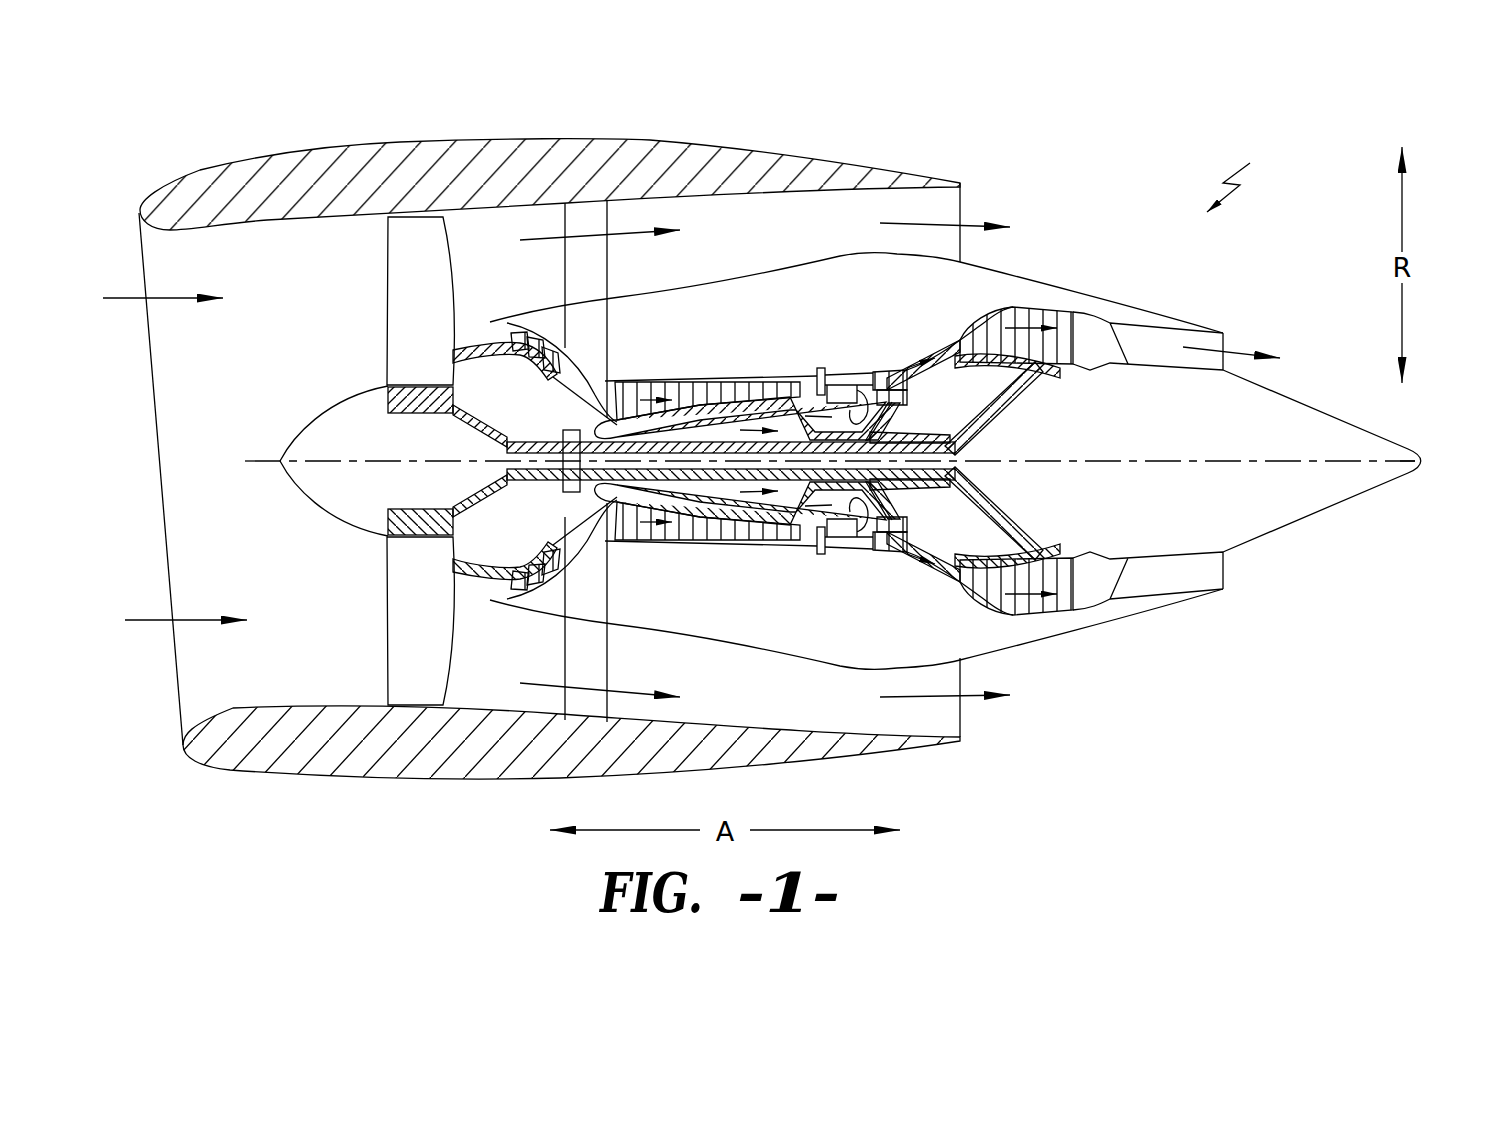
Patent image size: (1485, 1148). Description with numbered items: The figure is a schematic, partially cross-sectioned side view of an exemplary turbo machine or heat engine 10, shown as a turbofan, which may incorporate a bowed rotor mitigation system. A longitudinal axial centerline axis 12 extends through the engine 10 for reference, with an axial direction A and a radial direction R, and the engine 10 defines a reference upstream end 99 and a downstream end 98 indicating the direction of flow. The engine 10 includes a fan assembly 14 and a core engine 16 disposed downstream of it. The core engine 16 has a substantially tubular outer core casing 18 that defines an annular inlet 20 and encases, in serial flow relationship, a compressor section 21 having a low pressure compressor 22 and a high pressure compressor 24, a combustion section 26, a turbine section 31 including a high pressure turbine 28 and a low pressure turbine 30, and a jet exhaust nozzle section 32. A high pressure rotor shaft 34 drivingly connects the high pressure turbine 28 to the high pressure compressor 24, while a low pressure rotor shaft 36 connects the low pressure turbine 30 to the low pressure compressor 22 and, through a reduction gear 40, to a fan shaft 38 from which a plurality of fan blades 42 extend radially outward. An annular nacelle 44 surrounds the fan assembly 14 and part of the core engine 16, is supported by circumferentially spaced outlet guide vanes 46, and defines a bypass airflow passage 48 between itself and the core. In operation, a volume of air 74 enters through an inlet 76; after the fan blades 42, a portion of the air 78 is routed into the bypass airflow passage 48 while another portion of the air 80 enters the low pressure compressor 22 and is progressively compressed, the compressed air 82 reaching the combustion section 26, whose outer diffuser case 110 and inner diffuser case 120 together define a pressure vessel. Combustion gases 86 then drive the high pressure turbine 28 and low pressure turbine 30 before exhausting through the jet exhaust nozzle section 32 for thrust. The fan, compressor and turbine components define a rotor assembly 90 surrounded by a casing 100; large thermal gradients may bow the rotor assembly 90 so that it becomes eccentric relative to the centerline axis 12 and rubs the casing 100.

The heat engine 10 is at (1249, 175).
The axial centerline axis 12 is at (1135, 458).
The fan assembly 14 is at (495, 232).
The core engine 16 is at (821, 260).
The outer core casing 18 is at (797, 656).
The annular inlet 20 is at (497, 587).
The compressor section 21 is at (633, 362).
The low pressure compressor 22 is at (568, 547).
The high pressure compressor 24 is at (640, 530).
The combustion section 26 is at (842, 537).
The high pressure turbine 28 is at (903, 542).
The low pressure turbine 30 is at (1047, 622).
The turbine section 31 is at (933, 325).
The jet exhaust nozzle section 32 is at (1138, 588).
The high pressure rotor shaft 34 is at (895, 398).
The low pressure rotor shaft 36 is at (995, 413).
The fan shaft 38 is at (452, 418).
The reduction gear 40 is at (568, 428).
The fan blades 42 is at (402, 293).
The nacelle 44 is at (397, 147).
The outlet guide vanes 46 is at (606, 212).
The bypass airflow passage 48 is at (725, 246).
The air 74 is at (172, 298).
The inlet 76 is at (230, 666).
The bypass air 78 is at (628, 232).
The core air flow 80 is at (477, 333).
The compressed air 82 is at (633, 390).
The combustion gases 86 is at (892, 362).
The rotor assembly 90 is at (722, 398).
The downstream end 98 is at (1433, 470).
The upstream end 99 is at (98, 470).
The casing 100 is at (575, 372).
The outer diffuser case 110 is at (806, 372).
The inner diffuser case 120 is at (865, 522).